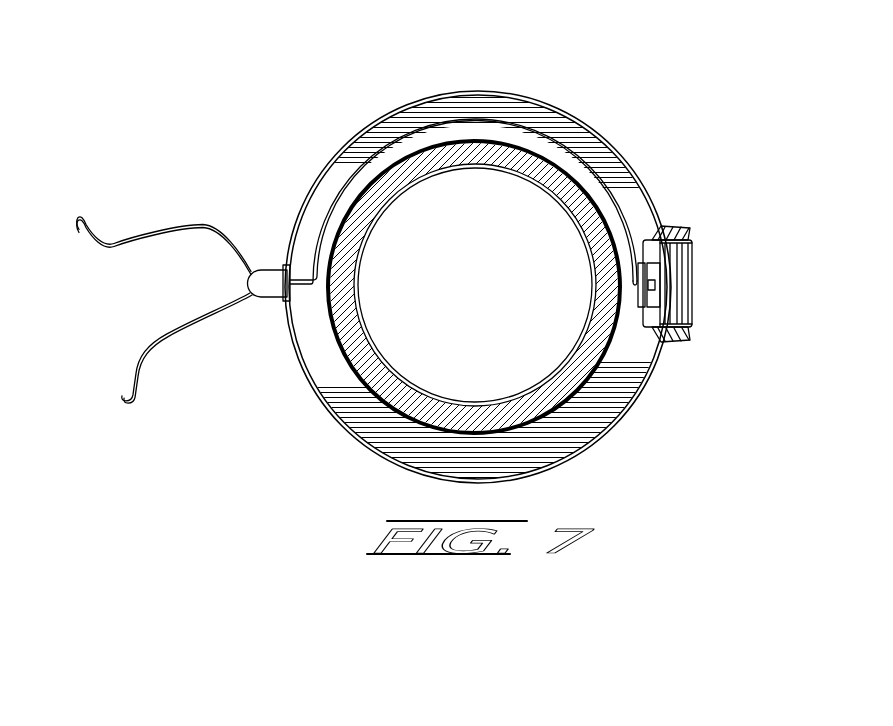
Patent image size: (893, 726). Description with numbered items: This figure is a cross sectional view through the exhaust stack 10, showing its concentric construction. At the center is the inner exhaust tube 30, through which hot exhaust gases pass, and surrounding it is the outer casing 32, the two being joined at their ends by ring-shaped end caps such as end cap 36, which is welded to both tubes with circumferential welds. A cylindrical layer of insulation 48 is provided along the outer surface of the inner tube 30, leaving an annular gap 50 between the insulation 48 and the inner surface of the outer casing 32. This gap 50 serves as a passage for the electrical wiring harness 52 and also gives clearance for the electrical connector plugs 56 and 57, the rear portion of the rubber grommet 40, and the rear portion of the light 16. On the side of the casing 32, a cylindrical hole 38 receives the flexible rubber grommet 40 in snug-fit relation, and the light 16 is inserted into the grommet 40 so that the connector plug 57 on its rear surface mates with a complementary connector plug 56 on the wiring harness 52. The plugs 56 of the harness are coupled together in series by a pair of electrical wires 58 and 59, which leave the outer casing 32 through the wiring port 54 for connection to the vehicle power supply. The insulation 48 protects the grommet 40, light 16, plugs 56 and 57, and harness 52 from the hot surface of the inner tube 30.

The exhaust stack 10 is at (131, 160).
The light 16 is at (689, 308).
The inner exhaust tube 30 is at (542, 176).
The outer casing 32 is at (303, 383).
The end cap 36 is at (358, 387).
The cylindrical hole 38 is at (668, 343).
The rubber grommet 40 is at (689, 229).
The insulation 48 is at (458, 138).
The annular gap 50 is at (319, 199).
The electrical wiring harness 52 is at (614, 305).
The wiring port 54 is at (274, 268).
The electrical connector plug 56 is at (655, 226).
The electrical connector plug 57 is at (651, 285).
The electrical wire 58 is at (110, 243).
The electrical wire 59 is at (130, 370).